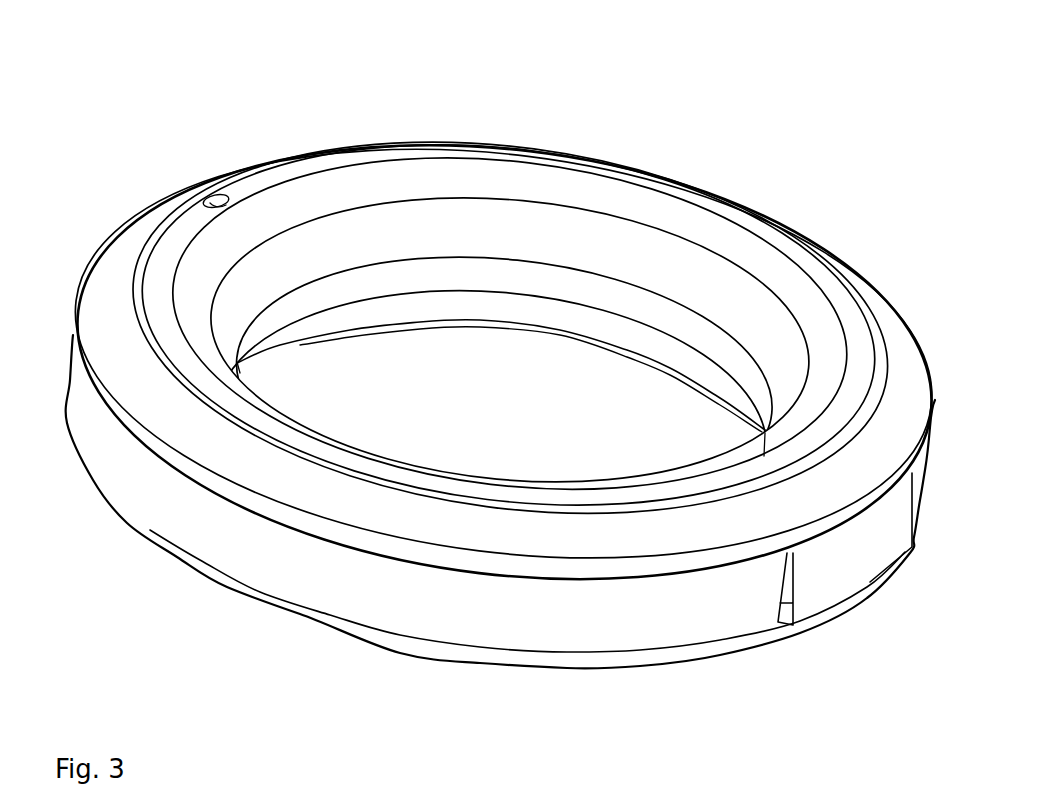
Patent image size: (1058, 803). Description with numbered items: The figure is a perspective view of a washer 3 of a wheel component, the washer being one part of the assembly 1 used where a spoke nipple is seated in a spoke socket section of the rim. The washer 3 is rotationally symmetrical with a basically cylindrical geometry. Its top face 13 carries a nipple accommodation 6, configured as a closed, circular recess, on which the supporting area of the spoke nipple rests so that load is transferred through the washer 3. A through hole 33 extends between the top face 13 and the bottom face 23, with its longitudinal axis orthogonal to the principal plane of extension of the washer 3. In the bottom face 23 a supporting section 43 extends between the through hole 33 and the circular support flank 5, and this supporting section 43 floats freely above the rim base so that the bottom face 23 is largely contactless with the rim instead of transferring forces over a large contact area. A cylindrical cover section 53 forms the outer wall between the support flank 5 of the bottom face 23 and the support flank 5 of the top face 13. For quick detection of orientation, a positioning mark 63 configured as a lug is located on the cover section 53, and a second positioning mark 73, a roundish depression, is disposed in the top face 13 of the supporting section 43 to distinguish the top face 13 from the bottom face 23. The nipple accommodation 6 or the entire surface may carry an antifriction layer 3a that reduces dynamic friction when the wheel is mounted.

The bearing ring assembly 1 is at (118, 54).
The washer 3 is at (150, 207).
The antifriction layer 3a is at (287, 572).
The support flank 5 is at (233, 452).
The nipple accommodation 6 is at (357, 190).
The top face 13 is at (462, 148).
The bottom face 23 is at (405, 652).
The through hole 33 is at (537, 390).
The supporting section 43 is at (407, 153).
The cover section 53 is at (155, 483).
The positioning mark 63 is at (830, 574).
The positioning mark 73 is at (220, 205).